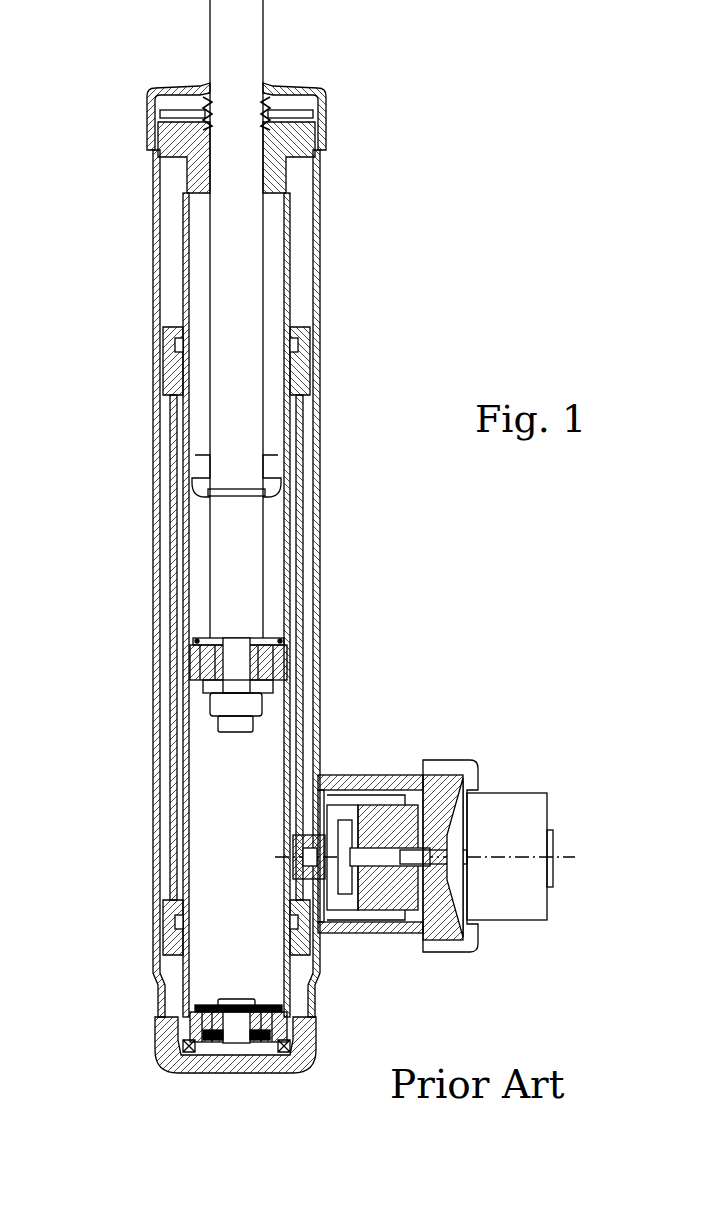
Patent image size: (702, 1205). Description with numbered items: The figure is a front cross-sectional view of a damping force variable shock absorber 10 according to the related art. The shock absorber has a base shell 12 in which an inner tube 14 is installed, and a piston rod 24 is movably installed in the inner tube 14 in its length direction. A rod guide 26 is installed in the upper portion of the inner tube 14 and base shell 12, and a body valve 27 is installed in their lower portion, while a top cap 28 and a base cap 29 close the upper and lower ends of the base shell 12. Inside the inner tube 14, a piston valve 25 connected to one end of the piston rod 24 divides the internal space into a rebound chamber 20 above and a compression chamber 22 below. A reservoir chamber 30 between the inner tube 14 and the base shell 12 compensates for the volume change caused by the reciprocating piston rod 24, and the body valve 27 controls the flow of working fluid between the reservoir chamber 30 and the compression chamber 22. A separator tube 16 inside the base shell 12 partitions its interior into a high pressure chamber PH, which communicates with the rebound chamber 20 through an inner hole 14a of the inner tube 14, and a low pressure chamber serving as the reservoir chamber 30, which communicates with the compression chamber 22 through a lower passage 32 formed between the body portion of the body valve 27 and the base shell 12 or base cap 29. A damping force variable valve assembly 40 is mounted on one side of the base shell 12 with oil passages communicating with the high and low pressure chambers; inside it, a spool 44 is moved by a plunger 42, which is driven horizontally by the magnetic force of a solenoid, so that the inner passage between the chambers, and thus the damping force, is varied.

The damping force variable shock absorber 10 is at (332, 524).
The base shell 12 is at (322, 614).
The inner tube 14 is at (288, 303).
The inner hole 14a is at (305, 392).
The separator tube 16 is at (300, 447).
The rebound chamber 20 is at (276, 280).
The compression chamber 22 is at (264, 755).
The piston rod 24 is at (258, 25).
The piston valve 25 is at (190, 663).
The rod guide 26 is at (290, 167).
The body valve 27 is at (313, 1030).
The top cap 28 is at (326, 130).
The base cap 29 is at (188, 1066).
The reservoir chamber 30 is at (165, 527).
The high pressure chamber PH is at (180, 580).
The lower passage 32 is at (282, 1057).
The damping force variable valve assembly 40 is at (512, 778).
The plunger 42 is at (443, 885).
The spool 44 is at (380, 915).